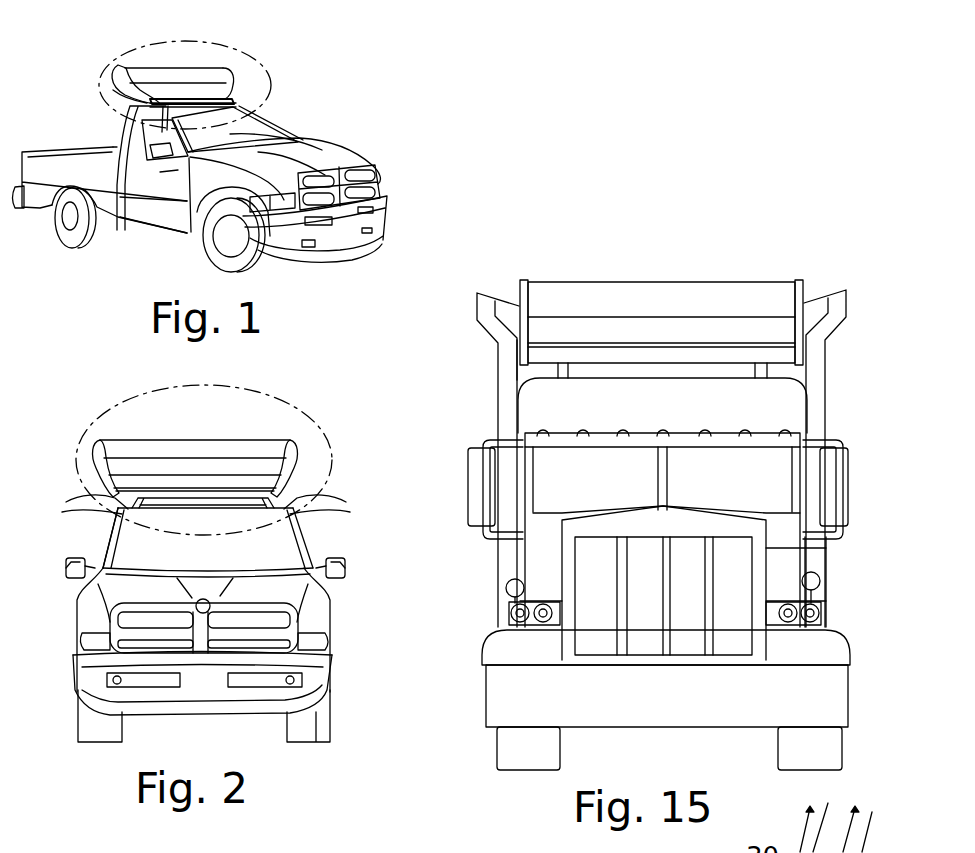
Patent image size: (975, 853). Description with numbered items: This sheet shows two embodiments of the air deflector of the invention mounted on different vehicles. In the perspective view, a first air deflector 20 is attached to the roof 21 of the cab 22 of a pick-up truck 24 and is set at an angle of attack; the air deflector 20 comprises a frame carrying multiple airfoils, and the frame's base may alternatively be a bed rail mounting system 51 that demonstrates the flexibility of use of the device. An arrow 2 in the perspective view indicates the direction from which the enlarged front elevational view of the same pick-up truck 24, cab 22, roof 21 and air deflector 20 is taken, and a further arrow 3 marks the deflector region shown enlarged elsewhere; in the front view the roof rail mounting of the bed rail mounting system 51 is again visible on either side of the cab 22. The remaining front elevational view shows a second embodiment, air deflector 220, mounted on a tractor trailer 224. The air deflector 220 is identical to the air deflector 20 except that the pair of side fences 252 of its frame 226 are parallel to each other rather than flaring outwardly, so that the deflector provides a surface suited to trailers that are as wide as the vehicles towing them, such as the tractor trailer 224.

In FIG. 1, the arrow 2 is at (436, 190).
In FIG. 1, the arrow 3 is at (258, 61).
In FIG. 2, the arrow 3 is at (328, 423).
In FIG. 1, the air deflector 20 is at (172, 56).
In FIG. 2, the air deflector 20 is at (164, 436).
In FIG. 1, the roof 21 is at (262, 93).
In FIG. 2, the roof 21 is at (88, 496).
In FIG. 1, the cab 22 is at (118, 127).
In FIG. 2, the cab 22 is at (97, 532).
In FIG. 1, the pick-up truck 24 is at (323, 140).
In FIG. 2, the pick-up truck 24 is at (342, 621).
In FIG. 1, the bed rail mounting system 51 is at (113, 90).
In FIG. 2, the bed rail mounting system 51 is at (322, 503).
In FIG. 15, the air deflector 220 is at (651, 275).
In FIG. 15, the tractor trailer 224 is at (521, 556).
In FIG. 15, the frame 226 is at (519, 352).
In FIG. 15, the side fences 252 is at (516, 295).